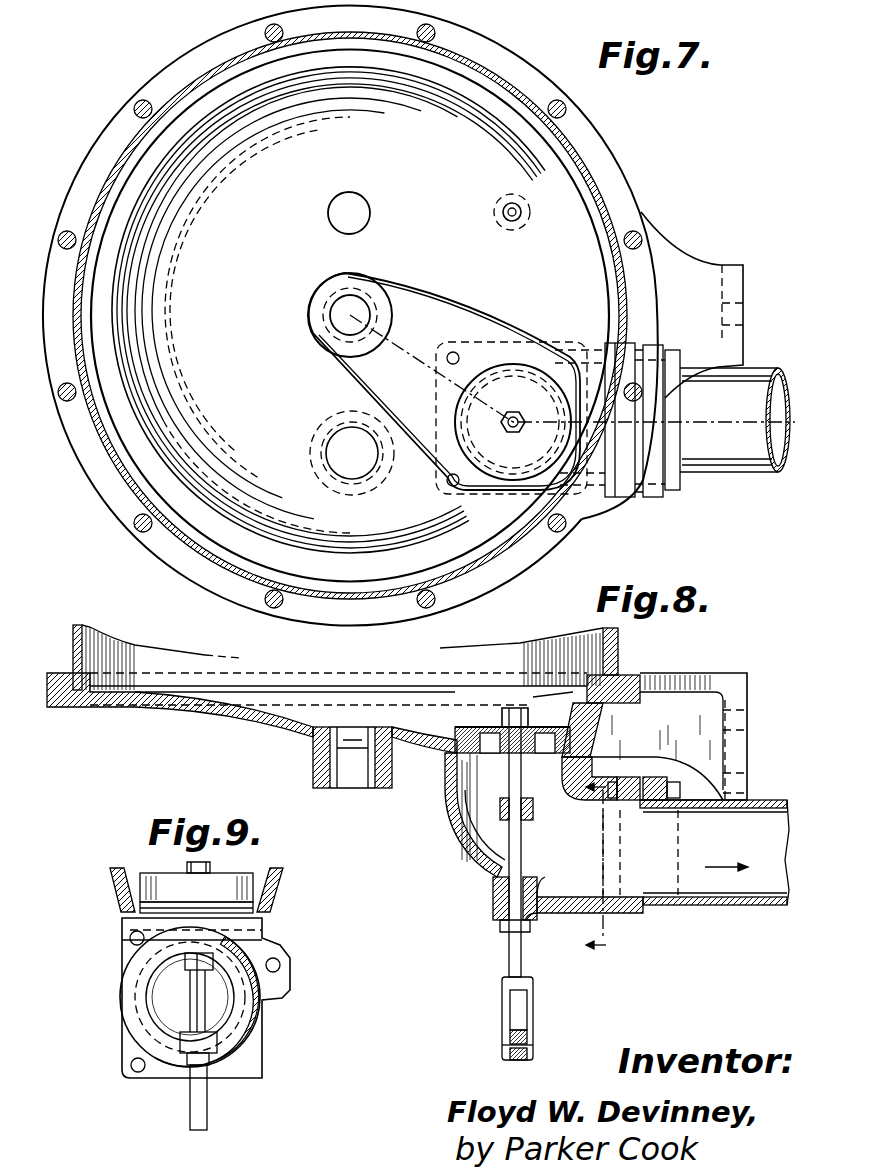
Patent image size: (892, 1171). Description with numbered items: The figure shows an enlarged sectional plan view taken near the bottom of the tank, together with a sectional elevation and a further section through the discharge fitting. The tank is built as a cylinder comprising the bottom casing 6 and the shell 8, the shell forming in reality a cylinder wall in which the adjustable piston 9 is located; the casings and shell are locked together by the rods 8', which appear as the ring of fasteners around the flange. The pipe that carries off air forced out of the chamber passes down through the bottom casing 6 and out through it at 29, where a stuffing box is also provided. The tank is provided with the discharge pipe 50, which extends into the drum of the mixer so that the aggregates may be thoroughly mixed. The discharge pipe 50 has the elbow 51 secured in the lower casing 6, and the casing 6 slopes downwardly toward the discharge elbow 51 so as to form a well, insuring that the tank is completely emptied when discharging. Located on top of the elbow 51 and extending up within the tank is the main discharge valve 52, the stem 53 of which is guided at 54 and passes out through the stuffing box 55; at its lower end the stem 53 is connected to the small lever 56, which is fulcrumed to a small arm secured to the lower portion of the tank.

In FIG. 7, the bottom casing 6 is at (105, 490).
In FIG. 8, the bottom casing 6 is at (133, 712).
In FIG. 9, the bottom casing 6 is at (283, 884).
In FIG. 7, the shell 8 is at (410, 315).
In FIG. 8, the shell 8 is at (345, 643).
In FIG. 7, the rods 8' is at (144, 78).
In FIG. 7, the pipe outlet 29 is at (360, 300).
In FIG. 8, the pipe outlet 29 is at (358, 772).
In FIG. 7, the discharge pipe 50 is at (722, 440).
In FIG. 8, the discharge pipe 50 is at (735, 885).
In FIG. 7, the elbow 51 is at (600, 498).
In FIG. 8, the elbow 51 is at (492, 849).
In FIG. 9, the elbow 51 is at (262, 1010).
In FIG. 7, the main discharge valve 52 is at (476, 418).
In FIG. 8, the main discharge valve 52 is at (505, 708).
In FIG. 9, the main discharge valve 52 is at (178, 882).
In FIG. 8, the stem 53 is at (522, 781).
In FIG. 9, the stem 53 is at (208, 1108).
In FIG. 8, the guide 54 is at (531, 821).
In FIG. 9, the guide 54 is at (208, 975).
In FIG. 8, the stuffing box 55 is at (501, 921).
In FIG. 9, the stuffing box 55 is at (218, 1069).
In FIG. 8, the small lever 56 is at (506, 1057).
In FIG. 8, the adjustable piston 9 is at (597, 871).